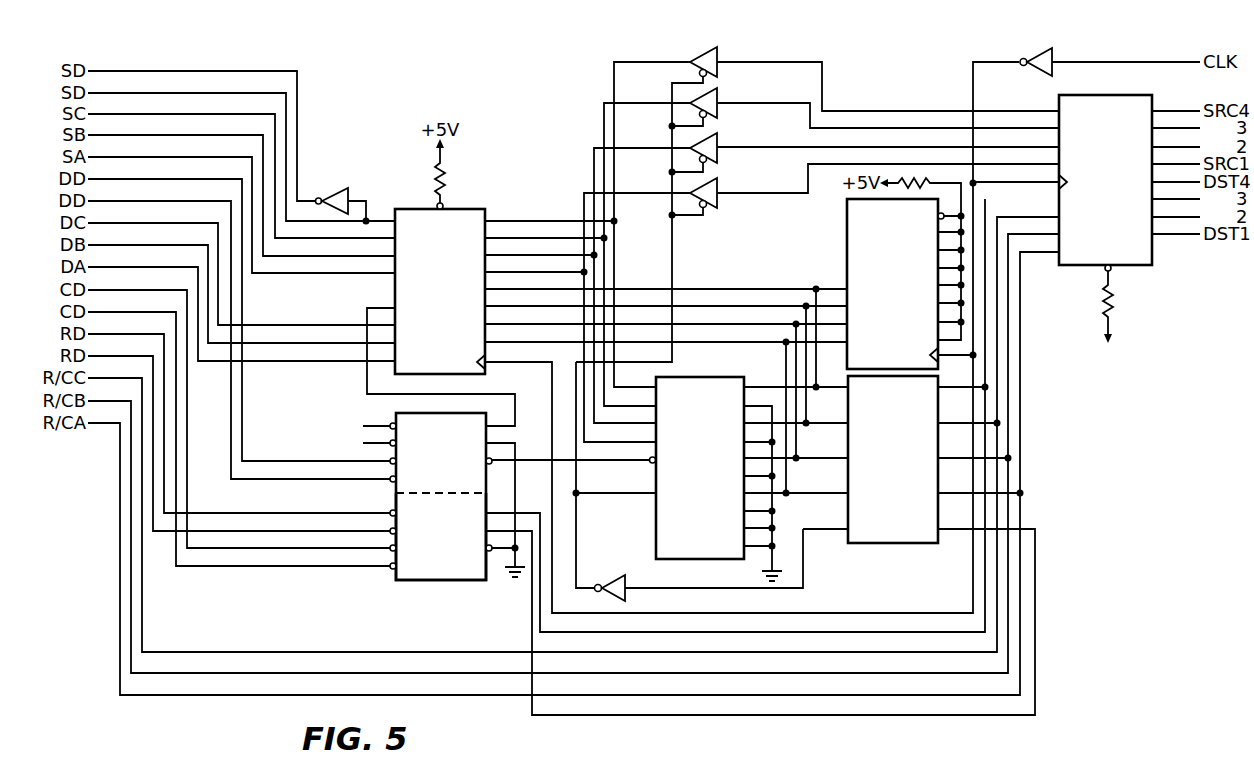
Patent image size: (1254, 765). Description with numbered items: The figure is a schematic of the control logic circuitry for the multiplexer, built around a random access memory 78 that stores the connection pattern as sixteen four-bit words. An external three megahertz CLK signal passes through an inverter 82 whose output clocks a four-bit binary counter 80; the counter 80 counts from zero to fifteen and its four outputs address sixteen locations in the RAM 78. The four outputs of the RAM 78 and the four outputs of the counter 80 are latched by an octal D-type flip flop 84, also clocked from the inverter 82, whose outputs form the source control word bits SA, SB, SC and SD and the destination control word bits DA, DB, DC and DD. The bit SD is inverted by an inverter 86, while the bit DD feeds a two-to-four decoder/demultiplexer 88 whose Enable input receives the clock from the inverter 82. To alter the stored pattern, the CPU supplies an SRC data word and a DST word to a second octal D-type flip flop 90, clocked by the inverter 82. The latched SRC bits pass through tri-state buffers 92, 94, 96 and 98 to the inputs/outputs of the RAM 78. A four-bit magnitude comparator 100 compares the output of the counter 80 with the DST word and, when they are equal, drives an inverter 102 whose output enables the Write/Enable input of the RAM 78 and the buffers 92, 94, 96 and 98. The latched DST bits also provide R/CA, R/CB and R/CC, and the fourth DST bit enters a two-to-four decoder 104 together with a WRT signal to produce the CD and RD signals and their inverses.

The random access memory 78 is at (690, 529).
The 4-bit binary counter 80 is at (872, 256).
The inverter 82 is at (1052, 74).
The octal D-type flip flop 84 is at (428, 303).
The inverter 86 is at (348, 187).
The 2-to-4 decoder/demultiplexer 88 is at (428, 462).
The octal D-type flip flop 90 is at (1091, 171).
The buffer 92 is at (717, 74).
The buffer 94 is at (717, 115).
The buffer 96 is at (717, 160).
The buffer 98 is at (717, 205).
The 4-bit magnitude comparator 100 is at (878, 482).
The inverter 102 is at (622, 579).
The 2-to-4 decoder 104 is at (425, 547).